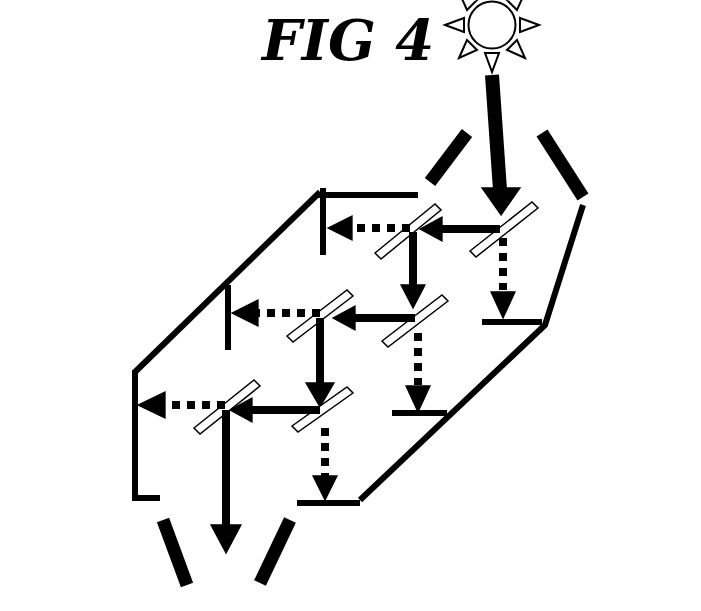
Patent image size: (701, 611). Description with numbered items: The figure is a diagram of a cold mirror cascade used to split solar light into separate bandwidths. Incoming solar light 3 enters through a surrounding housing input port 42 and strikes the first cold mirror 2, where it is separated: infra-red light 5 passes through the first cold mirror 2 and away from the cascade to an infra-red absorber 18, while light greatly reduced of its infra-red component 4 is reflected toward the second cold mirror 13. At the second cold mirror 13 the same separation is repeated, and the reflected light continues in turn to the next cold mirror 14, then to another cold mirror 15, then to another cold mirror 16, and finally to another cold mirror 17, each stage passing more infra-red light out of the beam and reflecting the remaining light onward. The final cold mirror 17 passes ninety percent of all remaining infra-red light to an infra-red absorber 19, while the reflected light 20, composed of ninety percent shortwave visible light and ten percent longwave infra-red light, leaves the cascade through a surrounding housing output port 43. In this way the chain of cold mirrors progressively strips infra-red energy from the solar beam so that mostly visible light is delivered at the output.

The first cold mirror 2 is at (517, 222).
The incoming solar light 3 is at (505, 110).
The light greatly reduced of its infra-red component 4 is at (467, 235).
The infra-red light 5 is at (497, 278).
The second cold mirror 13 is at (378, 255).
The cold mirror 14 is at (443, 303).
The cold mirror 15 is at (330, 305).
The cold mirror 16 is at (347, 392).
The final cold mirror 17 is at (245, 388).
The infra-red absorber 18 is at (518, 328).
The infra-red absorber 19 is at (135, 437).
The reflected light 20 is at (232, 492).
The surrounding housing input port 42 is at (445, 158).
The surrounding housing output port 43 is at (282, 558).